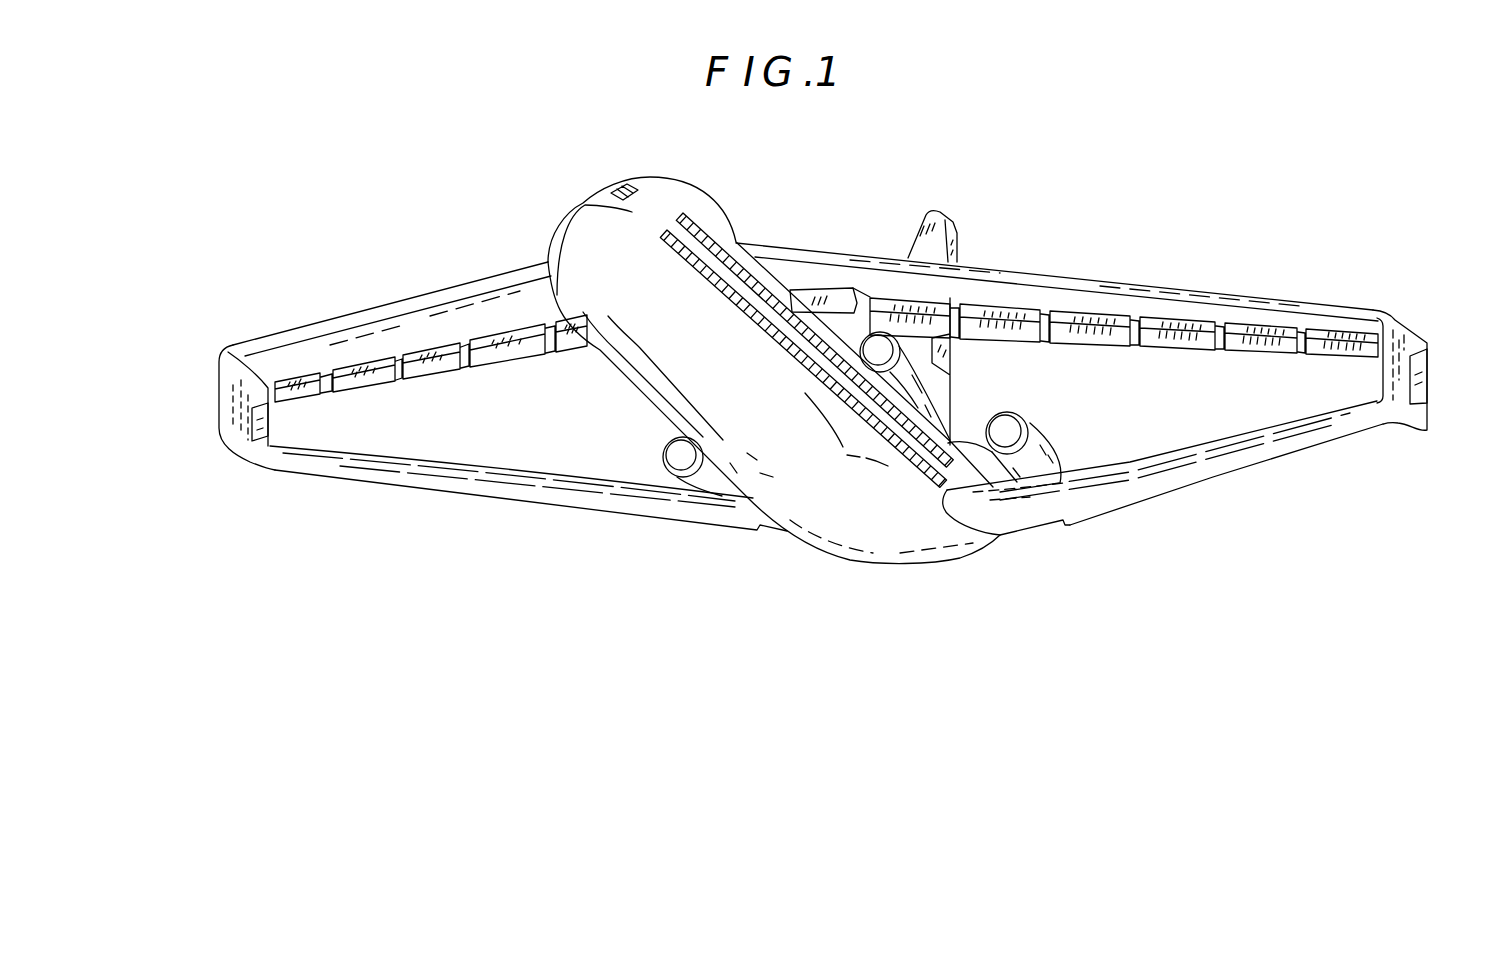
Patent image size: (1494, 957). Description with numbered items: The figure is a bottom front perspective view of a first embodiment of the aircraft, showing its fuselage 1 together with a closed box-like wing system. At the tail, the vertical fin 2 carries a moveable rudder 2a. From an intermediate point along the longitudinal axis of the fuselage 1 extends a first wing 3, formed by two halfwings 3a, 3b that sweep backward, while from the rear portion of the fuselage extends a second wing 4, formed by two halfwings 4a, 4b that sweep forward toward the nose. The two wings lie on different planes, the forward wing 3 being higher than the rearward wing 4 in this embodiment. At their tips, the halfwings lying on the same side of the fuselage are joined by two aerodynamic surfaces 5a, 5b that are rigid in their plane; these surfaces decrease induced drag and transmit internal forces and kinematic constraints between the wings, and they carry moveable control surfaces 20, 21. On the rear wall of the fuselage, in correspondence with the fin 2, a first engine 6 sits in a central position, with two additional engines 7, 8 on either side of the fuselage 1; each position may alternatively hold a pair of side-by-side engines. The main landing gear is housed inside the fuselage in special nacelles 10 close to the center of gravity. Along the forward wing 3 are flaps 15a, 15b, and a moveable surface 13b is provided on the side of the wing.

The fuselage 1 is at (690, 292).
The fin 2 is at (938, 235).
The rudder 2a is at (957, 368).
The first wing 3 is at (274, 334).
The halfwing 3a is at (425, 313).
The halfwing 3b is at (1122, 288).
The second wing 4 is at (388, 481).
The halfwing 4a is at (513, 493).
The halfwing 4b is at (1212, 474).
The aerodynamic surface 5a is at (227, 393).
The aerodynamic surface 5b is at (1400, 325).
The first engine 6 is at (925, 400).
The additional engine 7 is at (720, 488).
The additional engine 8 is at (1040, 473).
The nacelle 10 is at (847, 457).
The moveable surface 13b is at (812, 300).
The flap 15a is at (553, 353).
The flap 15b is at (1300, 353).
The moveable control surface 20 is at (270, 427).
The moveable control surface 21 is at (1422, 390).